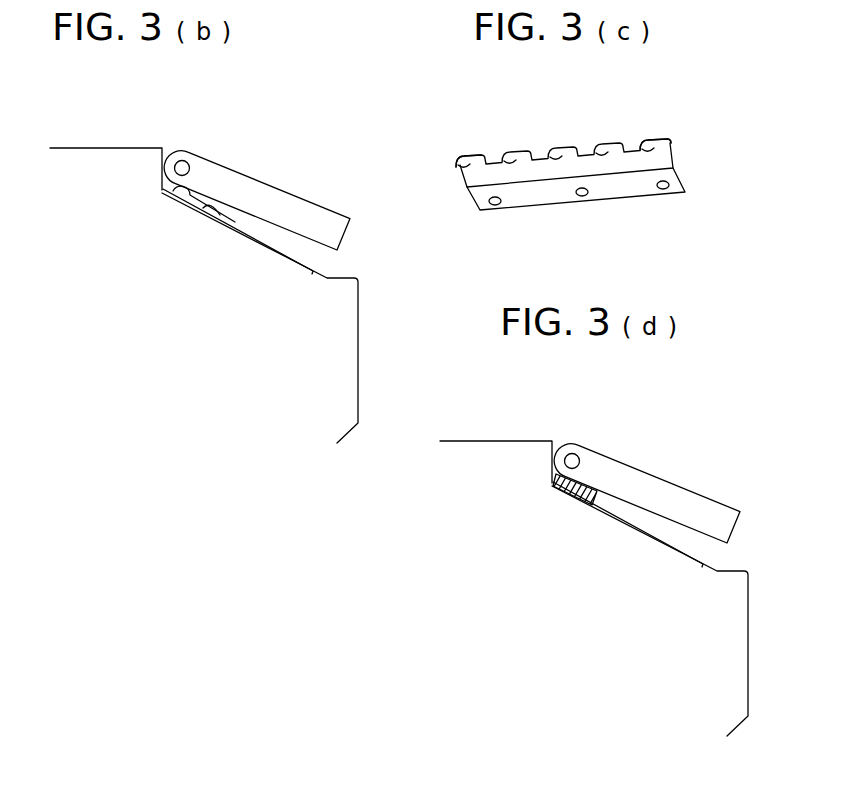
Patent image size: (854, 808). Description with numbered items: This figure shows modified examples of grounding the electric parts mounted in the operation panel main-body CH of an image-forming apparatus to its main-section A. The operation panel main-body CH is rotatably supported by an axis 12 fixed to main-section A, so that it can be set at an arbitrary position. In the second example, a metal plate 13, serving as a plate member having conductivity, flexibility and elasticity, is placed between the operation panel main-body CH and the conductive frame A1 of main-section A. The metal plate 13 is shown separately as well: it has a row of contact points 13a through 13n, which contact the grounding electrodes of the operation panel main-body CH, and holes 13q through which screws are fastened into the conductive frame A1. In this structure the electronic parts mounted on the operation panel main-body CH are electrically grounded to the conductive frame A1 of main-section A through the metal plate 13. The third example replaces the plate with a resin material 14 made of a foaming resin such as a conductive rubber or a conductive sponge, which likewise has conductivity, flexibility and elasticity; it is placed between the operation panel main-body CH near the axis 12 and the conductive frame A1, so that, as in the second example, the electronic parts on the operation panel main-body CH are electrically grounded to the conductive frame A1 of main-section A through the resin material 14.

In FIG. 3B, the main-section A is at (106, 144).
In FIG. 3D, the main-section A is at (594, 556).
In FIG. 3B, the conductive frame A1 is at (260, 248).
In FIG. 3D, the conductive frame A1 is at (628, 539).
In FIG. 3B, the operation panel main-body CH is at (278, 181).
In FIG. 3D, the operation panel main-body CH is at (647, 480).
In FIG. 3B, the axis 12 is at (183, 160).
In FIG. 3D, the axis 12 is at (578, 435).
In FIG. 3B, the metal plate 13 is at (183, 195).
In FIG. 3C, the metal plate 13 is at (563, 134).
In FIG. 3C, the contact point 13a is at (474, 157).
In FIG. 3C, the contact point 13n is at (657, 142).
In FIG. 3C, the holes 13q is at (660, 190).
In FIG. 3D, the resin material 14 is at (575, 518).